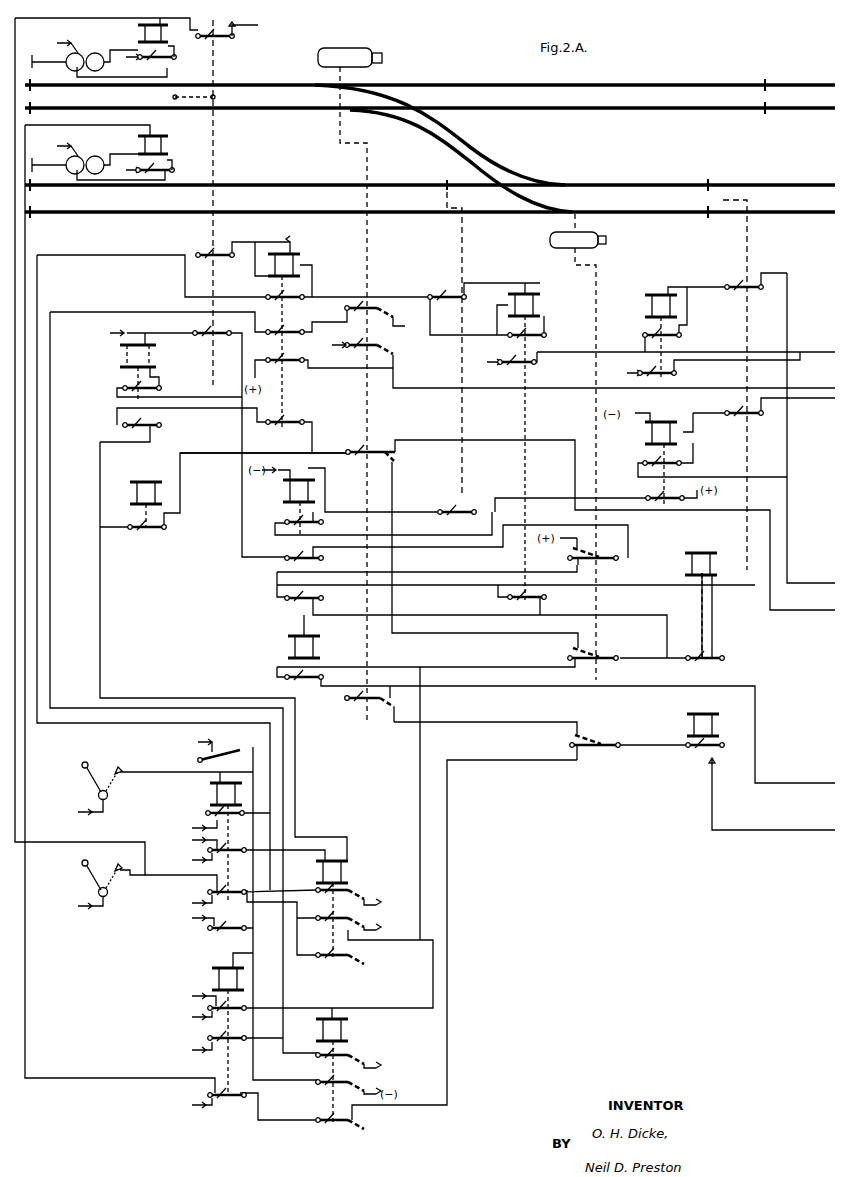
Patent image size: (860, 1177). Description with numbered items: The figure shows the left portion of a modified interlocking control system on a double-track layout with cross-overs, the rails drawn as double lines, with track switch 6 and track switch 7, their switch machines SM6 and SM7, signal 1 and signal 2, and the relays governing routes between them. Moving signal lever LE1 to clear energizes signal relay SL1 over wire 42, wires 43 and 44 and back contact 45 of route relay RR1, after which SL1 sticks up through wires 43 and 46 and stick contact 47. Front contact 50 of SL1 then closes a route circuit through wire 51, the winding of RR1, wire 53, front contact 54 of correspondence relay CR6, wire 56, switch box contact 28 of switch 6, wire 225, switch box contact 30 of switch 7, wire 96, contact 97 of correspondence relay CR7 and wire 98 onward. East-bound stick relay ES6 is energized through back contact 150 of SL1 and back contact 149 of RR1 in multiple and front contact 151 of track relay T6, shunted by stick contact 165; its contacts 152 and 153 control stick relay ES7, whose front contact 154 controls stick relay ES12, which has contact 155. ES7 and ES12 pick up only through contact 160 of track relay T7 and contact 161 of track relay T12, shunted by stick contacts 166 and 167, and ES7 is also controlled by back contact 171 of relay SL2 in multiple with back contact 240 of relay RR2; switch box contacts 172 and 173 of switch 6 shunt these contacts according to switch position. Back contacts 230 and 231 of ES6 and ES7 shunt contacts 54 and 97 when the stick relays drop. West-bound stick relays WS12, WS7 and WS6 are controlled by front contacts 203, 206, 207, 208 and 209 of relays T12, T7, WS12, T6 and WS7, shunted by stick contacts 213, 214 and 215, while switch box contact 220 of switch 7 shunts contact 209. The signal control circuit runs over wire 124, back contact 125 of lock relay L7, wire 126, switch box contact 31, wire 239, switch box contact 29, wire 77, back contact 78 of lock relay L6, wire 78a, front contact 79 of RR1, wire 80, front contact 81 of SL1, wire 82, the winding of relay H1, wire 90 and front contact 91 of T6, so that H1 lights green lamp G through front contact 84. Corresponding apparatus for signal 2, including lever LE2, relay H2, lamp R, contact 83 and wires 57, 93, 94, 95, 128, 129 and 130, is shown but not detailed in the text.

The signal 1 is at (136, 42).
The track battery unit 2 is at (111, 154).
The track switch 6 is at (310, 93).
The track switch 7 is at (575, 204).
The switch box contact 28 is at (358, 448).
The switch box contact 29 is at (360, 698).
The switch box contact 30 is at (594, 661).
The switch box contact 31 is at (590, 749).
The wire 42 is at (150, 763).
The wire 43 is at (233, 769).
The wire 44 is at (263, 928).
The back contact 45 is at (348, 924).
The wire 46 is at (232, 755).
The stick contact 47 is at (205, 760).
The front contact 50 is at (230, 848).
The wire 51 is at (308, 848).
The wire 53 is at (100, 530).
The front contact 54 is at (144, 532).
The wire 56 is at (320, 456).
The wire 57 is at (498, 440).
The wire 77 is at (347, 700).
The back contact 78 is at (303, 683).
The wire 78a is at (320, 668).
The front contact 79 is at (349, 964).
The wire 80 is at (318, 958).
The front contact 81 is at (222, 892).
The wire 82 is at (93, 842).
The contact 83 is at (173, 161).
The front contact 84 is at (154, 56).
The wire 90 is at (197, 28).
The front contact 91 is at (220, 42).
The contact 93 is at (213, 1007).
The wire 94 is at (305, 1008).
The wire 95 is at (448, 799).
The wire 96 is at (651, 657).
The front contact 97 is at (692, 657).
The wire 98 is at (755, 632).
The wire 124 is at (774, 831).
The back contact 125 is at (696, 747).
The wire 126 is at (656, 745).
The contact 128 is at (337, 1124).
The wire 129 is at (295, 1120).
The contact 130 is at (224, 1098).
The back contact 149 is at (347, 894).
The back contact 150 is at (208, 808).
The front contact 151 is at (213, 253).
The contact 152 is at (276, 337).
The contact 153 is at (300, 364).
The front contact 154 is at (534, 366).
The contact 155 is at (660, 365).
The contact 160 is at (450, 284).
The contact 161 is at (747, 284).
The stick contact 165 is at (302, 297).
The stick contact 166 is at (542, 334).
The stick contact 167 is at (646, 336).
The back contact 171 is at (213, 1044).
The switch box contact 172 is at (358, 322).
The switch box contact 173 is at (358, 356).
The front contact 203 is at (741, 416).
The front contact 206 is at (446, 509).
The front contact 207 is at (650, 496).
The front contact 208 is at (208, 337).
The front contact 209 is at (287, 556).
The stick contact 213 is at (642, 461).
The stick contact 214 is at (288, 521).
The stick contact 215 is at (157, 425).
The switch box contact 220 is at (604, 561).
The wire 225 is at (392, 490).
The back contact 230 is at (302, 422).
The back contact 231 is at (510, 598).
The wire 239 is at (510, 722).
The back contact 240 is at (349, 1059).
The clear green lamp G is at (75, 47).
The resistor R is at (49, 68).
The relay H1 is at (162, 34).
The relay H2 is at (162, 141).
The switch machine SM6 is at (345, 374).
The switch machine SM7 is at (548, 240).
The track relay T6 is at (213, 141).
The track relay T7 is at (462, 250).
The track relay T12 is at (747, 248).
The stick relay ES6 is at (296, 332).
The stick relay ES7 is at (537, 440).
The stick relay ES12 is at (640, 337).
The stick relay WS6 is at (123, 363).
The stick relay WS7 is at (285, 507).
The stick relay WS12 is at (638, 463).
The correspondence relay CR6 is at (131, 495).
The correspondence relay CR7 is at (716, 560).
The lock relay L6 is at (288, 648).
The lock relay L7 is at (687, 716).
The signal lever LE1 is at (92, 788).
The lever LE2 is at (92, 876).
The signal relay SL1 is at (210, 788).
The signal relay SL2 is at (212, 974).
The route relay RR1 is at (345, 870).
The route relay RR2 is at (346, 1030).